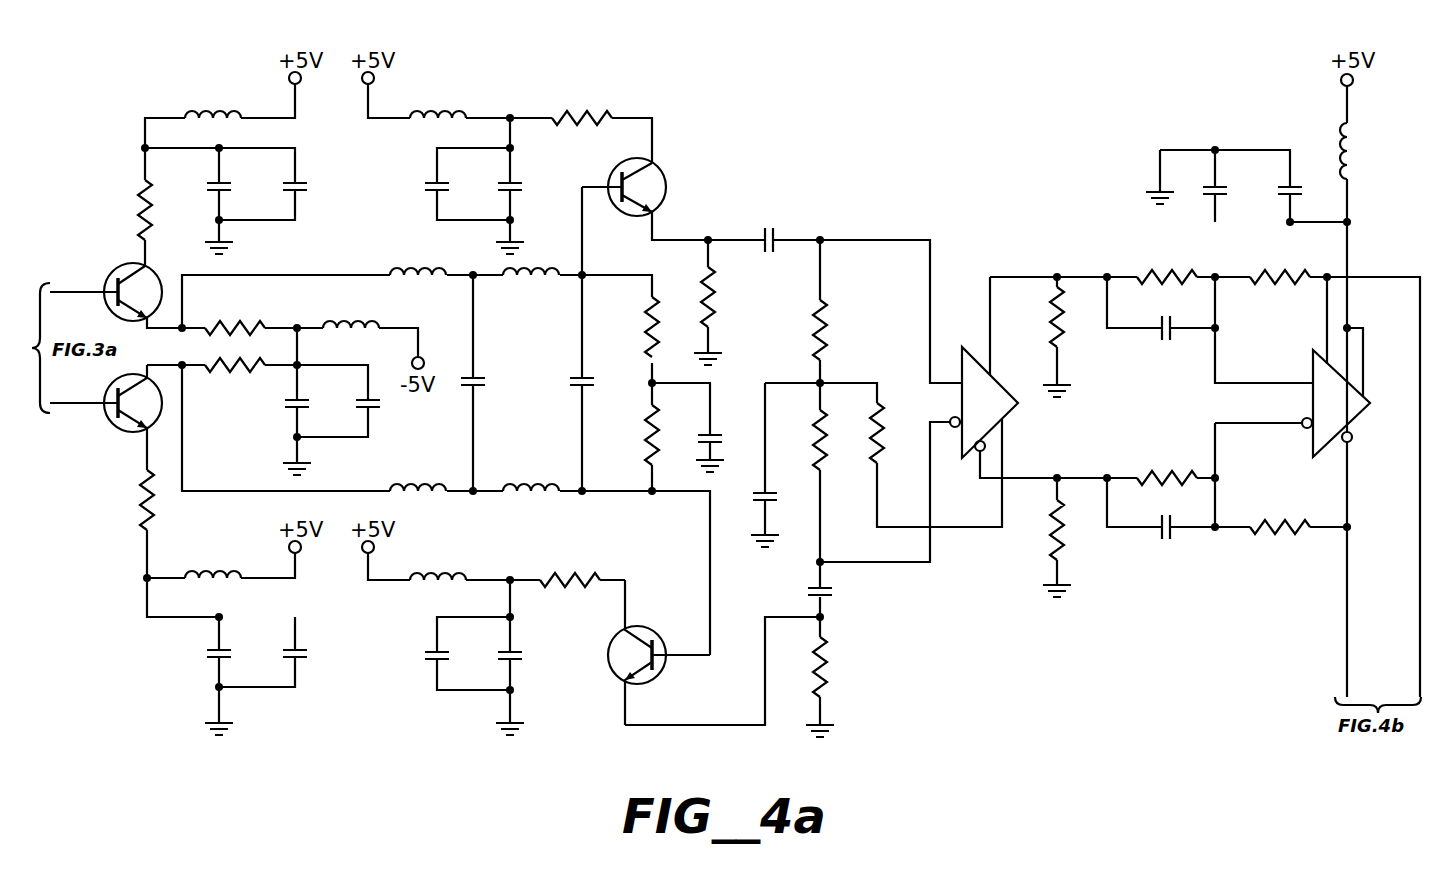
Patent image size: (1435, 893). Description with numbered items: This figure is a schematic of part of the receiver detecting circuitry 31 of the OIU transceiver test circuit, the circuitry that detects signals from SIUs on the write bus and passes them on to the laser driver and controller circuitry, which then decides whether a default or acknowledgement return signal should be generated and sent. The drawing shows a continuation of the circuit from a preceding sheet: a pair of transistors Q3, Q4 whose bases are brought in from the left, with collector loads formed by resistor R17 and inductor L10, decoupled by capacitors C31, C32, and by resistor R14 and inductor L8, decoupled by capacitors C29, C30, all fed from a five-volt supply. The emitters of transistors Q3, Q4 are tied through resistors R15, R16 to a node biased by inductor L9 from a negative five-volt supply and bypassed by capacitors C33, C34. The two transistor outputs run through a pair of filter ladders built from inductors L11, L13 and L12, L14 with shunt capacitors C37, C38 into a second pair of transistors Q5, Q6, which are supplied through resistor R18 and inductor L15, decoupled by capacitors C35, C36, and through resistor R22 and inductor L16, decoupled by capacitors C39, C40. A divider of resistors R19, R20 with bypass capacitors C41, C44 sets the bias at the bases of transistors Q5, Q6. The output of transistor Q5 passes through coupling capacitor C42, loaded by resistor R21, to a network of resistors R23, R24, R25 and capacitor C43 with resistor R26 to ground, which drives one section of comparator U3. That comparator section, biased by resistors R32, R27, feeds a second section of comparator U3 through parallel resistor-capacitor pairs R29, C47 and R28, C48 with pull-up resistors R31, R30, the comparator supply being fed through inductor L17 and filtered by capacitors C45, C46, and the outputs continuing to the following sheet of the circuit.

The receiver detecting circuitry 31 is at (957, 152).
The transistor Q3 is at (121, 285).
The transistor Q4 is at (121, 412).
The transistor Q5 is at (651, 178).
The transistor Q6 is at (646, 666).
The comparator U3 is at (1160, 402).
The resistor R14 is at (122, 500).
The resistor R15 is at (237, 315).
The resistor R16 is at (237, 378).
The resistor R17 is at (121, 210).
The resistor R18 is at (582, 115).
The resistor R19 is at (629, 327).
The resistor R20 is at (629, 436).
The resistor R21 is at (732, 293).
The resistor R22 is at (570, 577).
The resistor R23 is at (844, 329).
The resistor R24 is at (839, 461).
The resistor R25 is at (899, 426).
The resistor R26 is at (846, 665).
The resistor R27 is at (1031, 535).
The resistor R28 is at (1167, 472).
The resistor R29 is at (1167, 271).
The resistor R30 is at (1279, 521).
The resistor R31 is at (1279, 271).
The resistor R32 is at (1032, 314).
The inductor L8 is at (214, 576).
The inductor L9 is at (351, 326).
The inductor L10 is at (214, 115).
The inductor L11 is at (416, 271).
The inductor L12 is at (421, 488).
The inductor L13 is at (533, 271).
The inductor L14 is at (529, 488).
The inductor L15 is at (439, 115).
The inductor L16 is at (437, 577).
The inductor L17 is at (1381, 153).
The capacitor C29 is at (201, 655).
The capacitor C30 is at (271, 655).
The capacitor C31 is at (203, 189).
The capacitor C32 is at (271, 189).
The capacitor C33 is at (258, 416).
The capacitor C34 is at (348, 402).
The capacitor C35 is at (456, 190).
The capacitor C36 is at (527, 189).
The capacitor C37 is at (494, 414).
The capacitor C38 is at (561, 355).
The capacitor C39 is at (454, 655).
The capacitor C40 is at (530, 655).
The capacitor C41 is at (727, 410).
The capacitor C42 is at (763, 214).
The capacitor C43 is at (862, 593).
The capacitor C44 is at (748, 493).
The capacitor C45 is at (1192, 193).
The capacitor C46 is at (1273, 193).
The capacitor C47 is at (1162, 353).
The capacitor C48 is at (1160, 556).